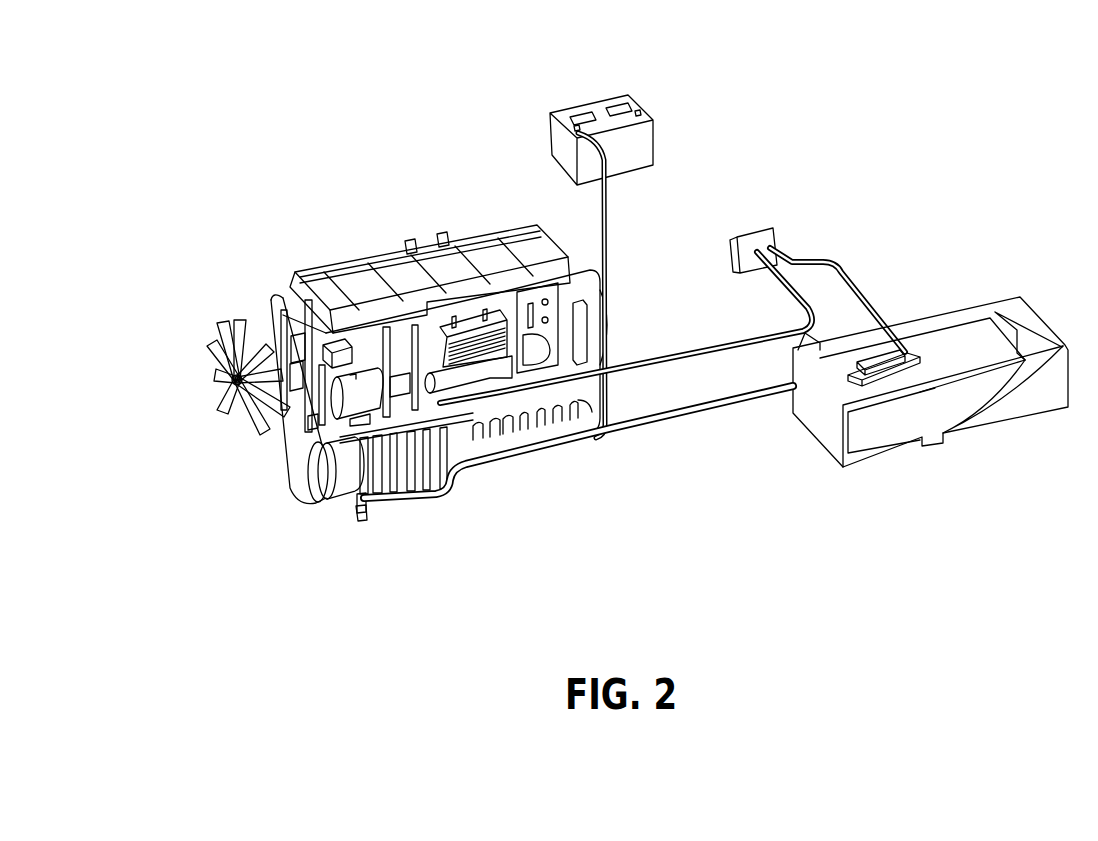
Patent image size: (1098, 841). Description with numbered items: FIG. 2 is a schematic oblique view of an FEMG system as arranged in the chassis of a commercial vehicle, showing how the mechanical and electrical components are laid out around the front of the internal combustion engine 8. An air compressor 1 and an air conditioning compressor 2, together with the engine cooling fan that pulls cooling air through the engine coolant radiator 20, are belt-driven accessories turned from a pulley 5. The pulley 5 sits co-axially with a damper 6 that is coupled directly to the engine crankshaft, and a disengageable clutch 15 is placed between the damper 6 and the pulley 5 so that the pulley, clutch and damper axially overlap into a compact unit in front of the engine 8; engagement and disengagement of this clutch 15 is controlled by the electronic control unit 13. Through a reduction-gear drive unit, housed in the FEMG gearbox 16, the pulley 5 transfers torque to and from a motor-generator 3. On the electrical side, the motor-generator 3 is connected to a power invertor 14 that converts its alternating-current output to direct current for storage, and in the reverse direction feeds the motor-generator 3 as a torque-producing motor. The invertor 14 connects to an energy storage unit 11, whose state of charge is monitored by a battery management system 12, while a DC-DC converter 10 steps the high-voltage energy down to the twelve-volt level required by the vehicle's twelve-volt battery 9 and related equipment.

The air compressor 1 is at (364, 399).
The air conditioning compressor 2 is at (339, 345).
The motor-generator 3 is at (340, 492).
The pulley 5 is at (312, 423).
The damper 6 is at (298, 352).
The internal combustion engine 8 is at (497, 232).
The 12 V battery 9 is at (588, 100).
The DC-DC converter 10 is at (362, 516).
The energy storage unit 11 is at (885, 423).
The battery management system 12 is at (880, 358).
The electronic control unit 13 is at (757, 238).
The power invertor 14 is at (368, 508).
The clutch 15 is at (288, 364).
The FEMG gearbox 16 is at (292, 468).
The engine coolant radiator 20 is at (237, 380).